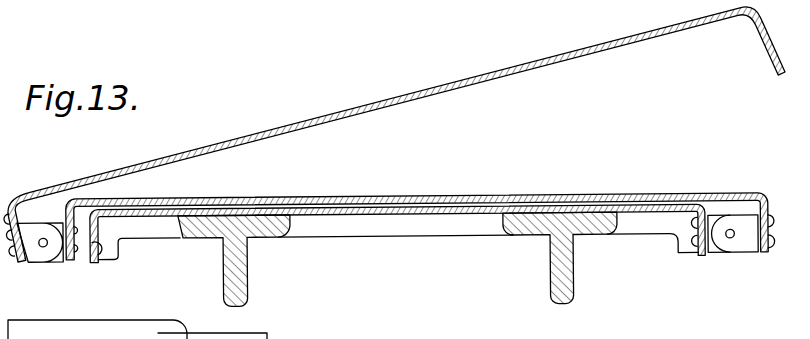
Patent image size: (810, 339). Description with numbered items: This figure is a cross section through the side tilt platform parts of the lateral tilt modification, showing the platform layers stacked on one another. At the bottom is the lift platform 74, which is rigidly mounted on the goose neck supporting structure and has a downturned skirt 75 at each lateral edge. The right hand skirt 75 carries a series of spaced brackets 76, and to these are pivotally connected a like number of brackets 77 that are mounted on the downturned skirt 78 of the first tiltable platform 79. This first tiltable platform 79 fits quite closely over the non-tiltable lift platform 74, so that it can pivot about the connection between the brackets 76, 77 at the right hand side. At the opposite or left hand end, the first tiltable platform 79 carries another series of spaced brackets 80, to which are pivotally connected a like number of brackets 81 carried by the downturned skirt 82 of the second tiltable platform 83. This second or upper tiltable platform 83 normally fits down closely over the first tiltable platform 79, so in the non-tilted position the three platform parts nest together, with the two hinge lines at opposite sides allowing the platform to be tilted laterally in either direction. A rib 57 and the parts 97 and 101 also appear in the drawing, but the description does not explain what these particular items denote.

The supporting rib 57 is at (247, 280).
The lift platform 74 is at (455, 214).
The downturned skirt 75 is at (100, 262).
The bracket 76 is at (717, 255).
The bracket 77 is at (742, 218).
The downturned skirt 78 is at (777, 240).
The first tiltable platform 79 is at (433, 197).
The bracket 80 is at (68, 260).
The bracket 81 is at (45, 259).
The downturned skirt 82 is at (7, 208).
The second tiltable platform 83 is at (241, 137).
The plate 97 is at (347, 337).
The flange 101 is at (337, 334).